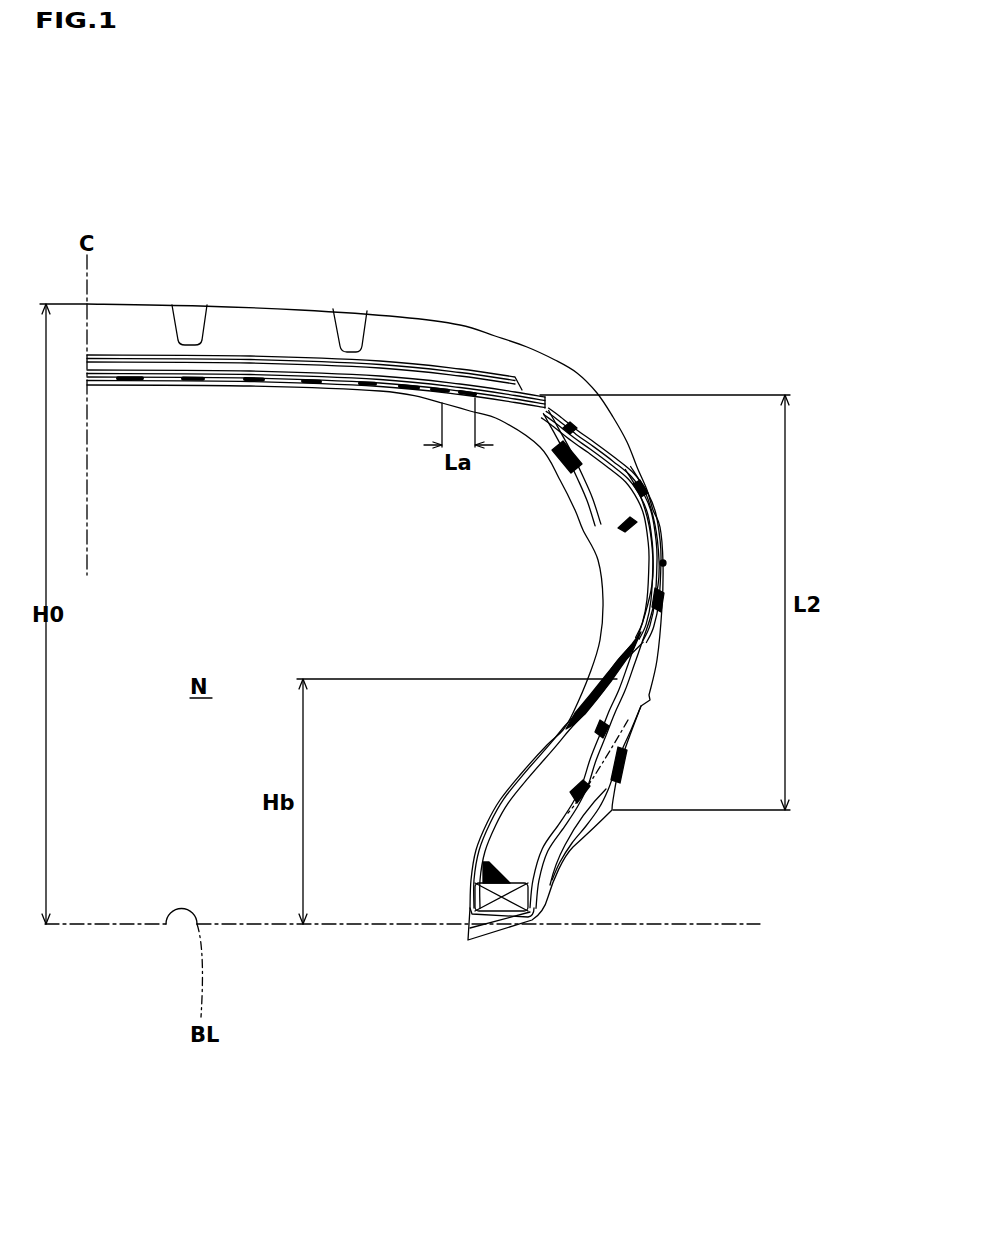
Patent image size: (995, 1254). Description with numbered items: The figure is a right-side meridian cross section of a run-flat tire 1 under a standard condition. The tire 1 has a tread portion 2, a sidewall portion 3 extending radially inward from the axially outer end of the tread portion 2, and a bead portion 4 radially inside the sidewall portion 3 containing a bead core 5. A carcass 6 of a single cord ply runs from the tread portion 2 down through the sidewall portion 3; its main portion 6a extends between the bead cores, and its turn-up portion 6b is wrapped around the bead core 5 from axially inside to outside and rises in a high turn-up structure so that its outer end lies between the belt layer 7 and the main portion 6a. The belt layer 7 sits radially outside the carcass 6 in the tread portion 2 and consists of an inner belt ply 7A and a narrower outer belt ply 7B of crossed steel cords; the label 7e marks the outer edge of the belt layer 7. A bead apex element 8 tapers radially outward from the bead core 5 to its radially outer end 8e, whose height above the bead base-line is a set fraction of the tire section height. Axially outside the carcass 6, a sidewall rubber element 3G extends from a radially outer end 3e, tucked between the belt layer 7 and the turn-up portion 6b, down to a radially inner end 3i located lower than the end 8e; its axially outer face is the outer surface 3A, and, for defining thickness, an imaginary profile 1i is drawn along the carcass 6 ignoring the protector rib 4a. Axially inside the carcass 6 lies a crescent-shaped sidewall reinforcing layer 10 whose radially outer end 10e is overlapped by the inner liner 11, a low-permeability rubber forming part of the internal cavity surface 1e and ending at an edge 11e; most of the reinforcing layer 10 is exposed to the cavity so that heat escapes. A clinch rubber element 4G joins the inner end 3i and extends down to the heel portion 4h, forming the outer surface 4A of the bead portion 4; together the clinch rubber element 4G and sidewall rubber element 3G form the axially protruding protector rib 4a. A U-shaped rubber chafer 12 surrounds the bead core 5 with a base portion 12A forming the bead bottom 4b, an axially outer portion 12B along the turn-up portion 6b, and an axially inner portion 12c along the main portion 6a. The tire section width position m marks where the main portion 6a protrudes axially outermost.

The run-flat tire 1 is at (577, 233).
The internal cavity surface 1e is at (563, 468).
The imaginary profile 1i is at (632, 722).
The tread portion 2 is at (279, 275).
The sidewall portion 3 is at (691, 504).
The outer surface 3A is at (660, 527).
The sidewall rubber element 3G is at (638, 518).
The radially outer end of sidewall rubber element 3e is at (477, 373).
The radially inner end of sidewall rubber element 3i is at (604, 811).
The bead portion 4 is at (586, 849).
The outer surface of clinch rubber element 4A is at (584, 851).
The clinch rubber element 4G is at (548, 882).
The protector rib 4a is at (606, 789).
The bottom of bead portion 4b is at (503, 929).
The heel portion 4h is at (546, 934).
The bead core 5 is at (486, 900).
The carcass 6 is at (527, 658).
The main portion 6a is at (636, 518).
The turn-up portion 6b is at (656, 556).
The belt layer 7 is at (355, 402).
The inner belt ply 7A is at (312, 374).
The outer belt ply 7B is at (258, 374).
The belt layer outer end 7e is at (550, 408).
The bead apex element 8 is at (510, 837).
The radially outer end of bead apex element 8e is at (642, 677).
The sidewall reinforcing layer 10 is at (620, 618).
The radially outer end of sidewall reinforcing layer 10e is at (440, 403).
The inner liner 11 is at (125, 382).
The band layer outer end 11e is at (476, 400).
The rubber chafer 12 is at (532, 998).
The base portion 12A is at (488, 932).
The axially outer portion 12B is at (603, 973).
The axially inner portion 12c is at (470, 918).
The tire section width position m is at (666, 563).